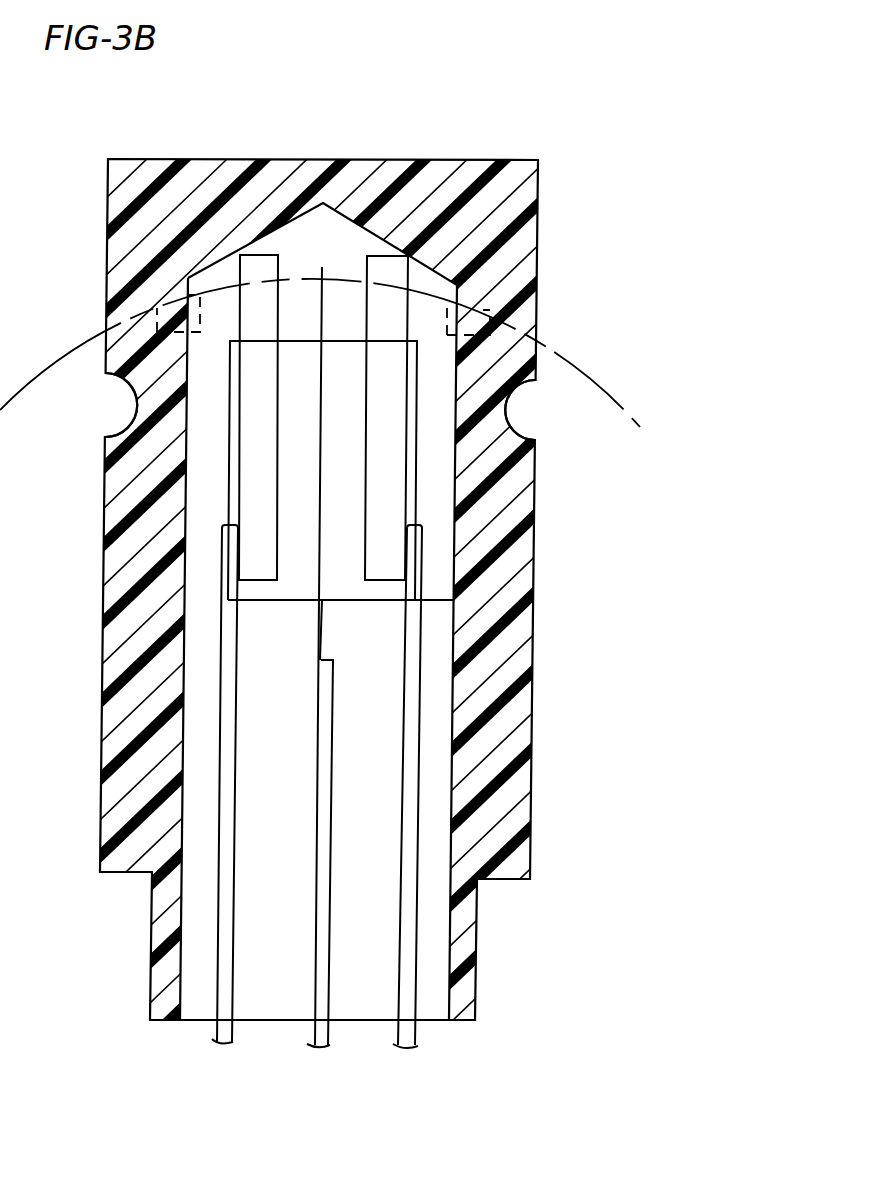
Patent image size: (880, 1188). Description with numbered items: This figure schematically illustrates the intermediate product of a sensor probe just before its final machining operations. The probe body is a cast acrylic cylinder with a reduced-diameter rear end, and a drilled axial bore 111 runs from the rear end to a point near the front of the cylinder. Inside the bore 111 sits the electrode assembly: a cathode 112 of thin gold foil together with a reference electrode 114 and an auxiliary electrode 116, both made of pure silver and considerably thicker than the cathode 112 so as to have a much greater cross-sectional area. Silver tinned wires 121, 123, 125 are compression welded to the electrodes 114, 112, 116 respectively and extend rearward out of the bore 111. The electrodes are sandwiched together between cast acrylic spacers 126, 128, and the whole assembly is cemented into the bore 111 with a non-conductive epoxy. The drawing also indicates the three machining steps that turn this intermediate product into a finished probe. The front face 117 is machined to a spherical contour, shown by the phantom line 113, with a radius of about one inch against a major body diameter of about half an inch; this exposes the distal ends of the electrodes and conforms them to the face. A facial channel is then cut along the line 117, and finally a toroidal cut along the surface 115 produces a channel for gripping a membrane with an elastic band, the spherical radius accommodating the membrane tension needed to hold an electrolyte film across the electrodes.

The axial bore 111 is at (477, 921).
The cathode 112 is at (322, 640).
The phantom line 113 is at (558, 353).
The reference electrode 114 is at (395, 485).
The surface 115 is at (512, 439).
The auxiliary electrode 116 is at (257, 492).
The front face 117 is at (503, 317).
The silver tinned wire 121 is at (402, 795).
The silver tinned wire 123 is at (318, 812).
The silver tinned wire 125 is at (235, 914).
The cast acrylic spacer 126 is at (290, 574).
The cast acrylic spacer 128 is at (343, 590).